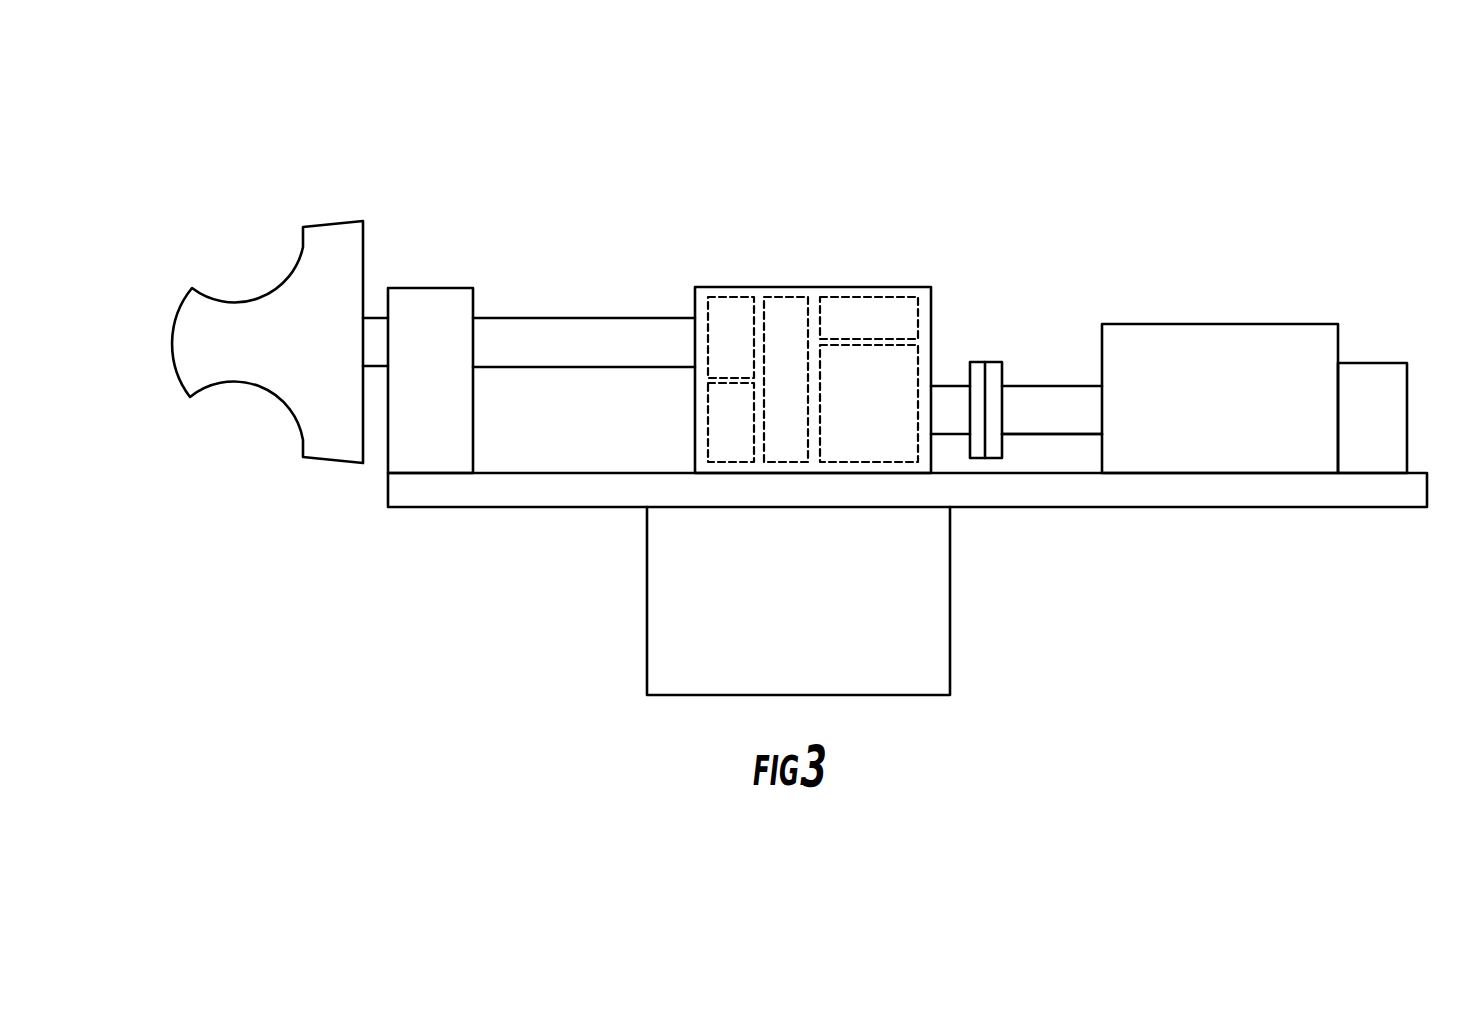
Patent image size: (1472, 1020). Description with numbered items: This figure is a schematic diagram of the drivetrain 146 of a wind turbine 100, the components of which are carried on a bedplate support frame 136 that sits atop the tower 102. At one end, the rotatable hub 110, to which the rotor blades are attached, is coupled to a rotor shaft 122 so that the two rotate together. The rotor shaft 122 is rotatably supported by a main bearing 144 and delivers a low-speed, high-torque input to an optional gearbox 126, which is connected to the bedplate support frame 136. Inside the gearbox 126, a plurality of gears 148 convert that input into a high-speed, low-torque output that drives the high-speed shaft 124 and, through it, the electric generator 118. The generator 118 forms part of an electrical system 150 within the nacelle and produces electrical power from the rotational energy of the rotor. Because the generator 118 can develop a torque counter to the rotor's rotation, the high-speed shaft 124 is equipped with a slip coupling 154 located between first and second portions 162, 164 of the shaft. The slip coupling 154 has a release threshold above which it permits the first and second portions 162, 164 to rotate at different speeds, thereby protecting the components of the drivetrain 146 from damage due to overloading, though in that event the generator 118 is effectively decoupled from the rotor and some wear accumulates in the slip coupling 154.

The wind turbine 100 is at (200, 88).
The tower 102 is at (937, 611).
The hub 110 is at (200, 337).
The electric generator 118 is at (1250, 337).
The rotor shaft 122 is at (598, 327).
The high-speed shaft 124 is at (1067, 394).
The gearbox 126 is at (760, 292).
The bedplate support frame 136 is at (1393, 500).
The main bearing 144 is at (438, 297).
The drivetrain 146 is at (850, 113).
The gears 148 is at (750, 353).
The electrical system 150 is at (1423, 325).
The slip coupling 154 is at (988, 350).
The first portion of the high-speed shaft 162 is at (945, 398).
The second portion of the high-speed shaft 164 is at (1045, 428).